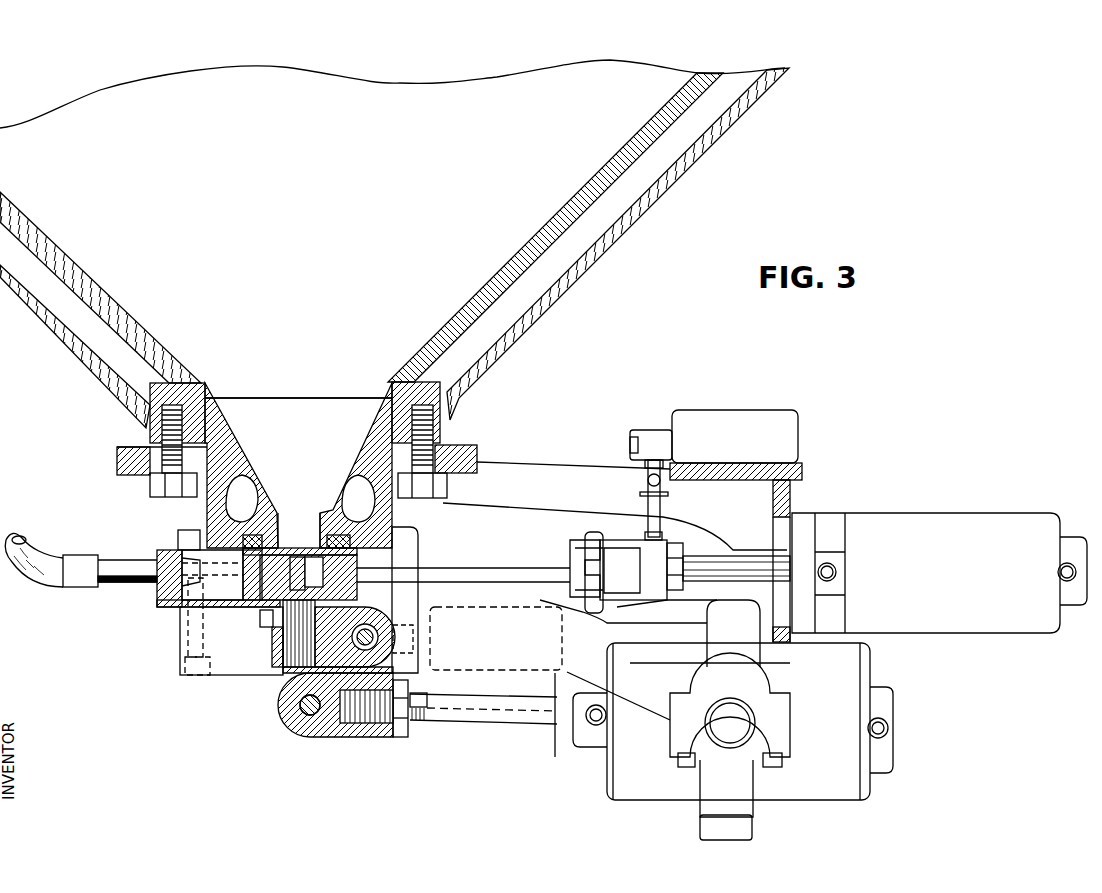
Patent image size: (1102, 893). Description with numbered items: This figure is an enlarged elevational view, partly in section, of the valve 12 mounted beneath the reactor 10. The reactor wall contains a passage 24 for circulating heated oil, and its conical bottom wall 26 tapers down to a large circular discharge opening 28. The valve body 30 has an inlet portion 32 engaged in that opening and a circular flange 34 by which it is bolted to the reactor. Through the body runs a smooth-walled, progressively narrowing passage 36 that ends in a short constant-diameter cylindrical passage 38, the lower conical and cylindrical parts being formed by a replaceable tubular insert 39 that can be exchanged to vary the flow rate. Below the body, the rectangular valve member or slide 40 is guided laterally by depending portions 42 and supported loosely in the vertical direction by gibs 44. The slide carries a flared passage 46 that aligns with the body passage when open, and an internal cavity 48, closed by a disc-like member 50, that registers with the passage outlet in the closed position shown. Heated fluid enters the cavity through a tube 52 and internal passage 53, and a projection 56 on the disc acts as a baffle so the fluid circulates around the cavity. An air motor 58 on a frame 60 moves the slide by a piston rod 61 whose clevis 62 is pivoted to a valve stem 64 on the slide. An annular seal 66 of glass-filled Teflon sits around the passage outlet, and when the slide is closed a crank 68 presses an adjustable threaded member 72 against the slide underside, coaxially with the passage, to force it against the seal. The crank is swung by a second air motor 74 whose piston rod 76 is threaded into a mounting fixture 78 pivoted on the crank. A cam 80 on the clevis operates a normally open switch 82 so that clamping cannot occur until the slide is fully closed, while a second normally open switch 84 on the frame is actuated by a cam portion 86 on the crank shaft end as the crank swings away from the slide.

The reactor 10 is at (592, 275).
The passage 24 is at (543, 285).
The conical bottom wall 26 is at (553, 215).
The discharge opening 28 is at (205, 390).
The body 30 is at (203, 498).
The inlet portion 32 is at (237, 398).
The circular flange 34 is at (473, 447).
The through-bore or passage 36 is at (238, 450).
The cylindrical passage 38 is at (280, 513).
The tubular insert 39 is at (260, 532).
The valve member or slide 40 is at (157, 588).
The depending portions 42 is at (403, 527).
The gibs 44 is at (225, 673).
The opening or passage 46 is at (183, 608).
The internal cavity 48 is at (325, 575).
The disc-like member 50 is at (243, 603).
The tube 52 is at (115, 568).
The internal passage 53 is at (178, 545).
The projection 56 is at (297, 570).
The air motor 58 is at (997, 520).
The frame 60 is at (790, 500).
The piston rod 61 is at (746, 567).
The clevis 62 is at (632, 540).
The valve stem 64 is at (505, 568).
The annular seal 66 is at (243, 540).
The lever or crank 68 is at (280, 678).
The threaded member 72 is at (280, 647).
The air motor 74 is at (870, 780).
The piston rod 76 is at (518, 725).
The mounting fixture 78 is at (360, 737).
The cam 80 is at (662, 492).
The normally open switch 82 is at (780, 412).
The second normally open switch 84 is at (489, 663).
The cam portion 86 is at (367, 615).
The valve 12 is at (427, 734).